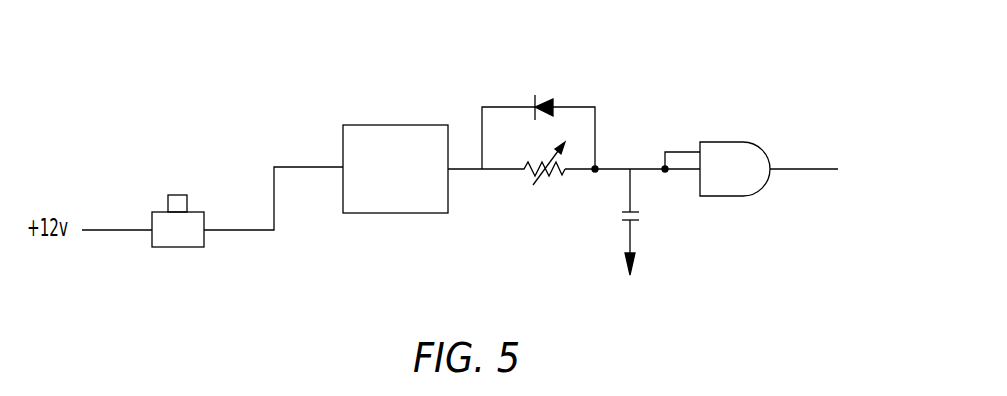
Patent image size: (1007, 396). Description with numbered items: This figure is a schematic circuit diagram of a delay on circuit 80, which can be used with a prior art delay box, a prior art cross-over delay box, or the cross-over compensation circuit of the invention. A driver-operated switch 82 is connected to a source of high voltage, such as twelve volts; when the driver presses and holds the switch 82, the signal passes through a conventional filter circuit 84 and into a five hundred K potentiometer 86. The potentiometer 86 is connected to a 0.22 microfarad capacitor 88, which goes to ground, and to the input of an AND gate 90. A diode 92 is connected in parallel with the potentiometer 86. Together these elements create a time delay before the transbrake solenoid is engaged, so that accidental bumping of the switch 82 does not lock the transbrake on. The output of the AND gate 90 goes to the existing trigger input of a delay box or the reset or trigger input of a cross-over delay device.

The delay on circuit 80 is at (556, 221).
The switch 82 is at (180, 248).
The filter circuit 84 is at (368, 213).
The potentiometer 86 is at (542, 180).
The capacitor 88 is at (648, 222).
The AND gate 90 is at (743, 196).
The diode 92 is at (538, 115).